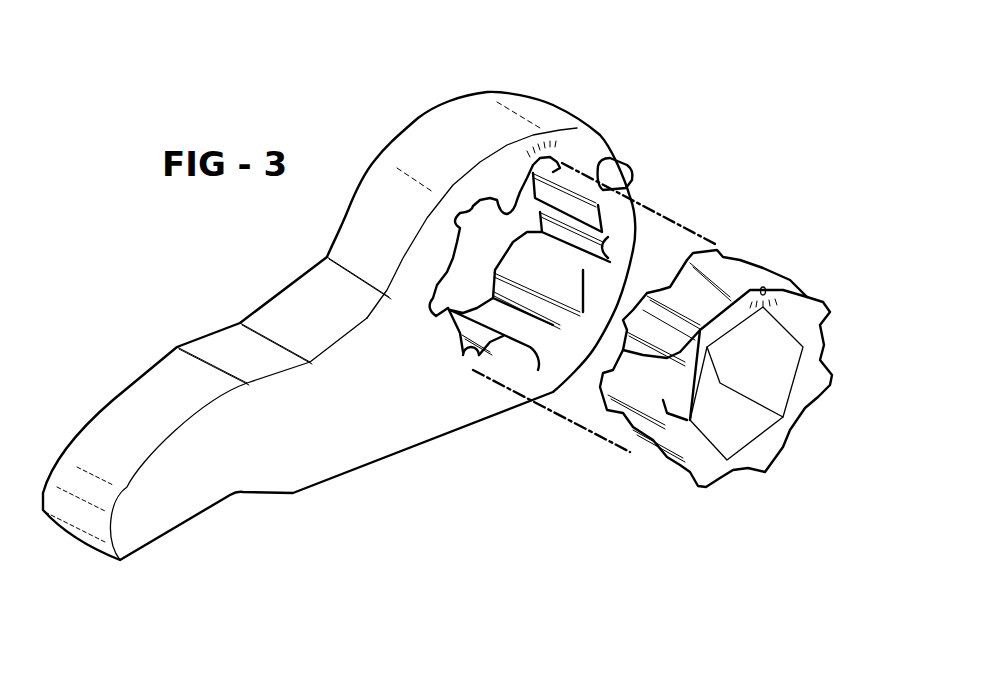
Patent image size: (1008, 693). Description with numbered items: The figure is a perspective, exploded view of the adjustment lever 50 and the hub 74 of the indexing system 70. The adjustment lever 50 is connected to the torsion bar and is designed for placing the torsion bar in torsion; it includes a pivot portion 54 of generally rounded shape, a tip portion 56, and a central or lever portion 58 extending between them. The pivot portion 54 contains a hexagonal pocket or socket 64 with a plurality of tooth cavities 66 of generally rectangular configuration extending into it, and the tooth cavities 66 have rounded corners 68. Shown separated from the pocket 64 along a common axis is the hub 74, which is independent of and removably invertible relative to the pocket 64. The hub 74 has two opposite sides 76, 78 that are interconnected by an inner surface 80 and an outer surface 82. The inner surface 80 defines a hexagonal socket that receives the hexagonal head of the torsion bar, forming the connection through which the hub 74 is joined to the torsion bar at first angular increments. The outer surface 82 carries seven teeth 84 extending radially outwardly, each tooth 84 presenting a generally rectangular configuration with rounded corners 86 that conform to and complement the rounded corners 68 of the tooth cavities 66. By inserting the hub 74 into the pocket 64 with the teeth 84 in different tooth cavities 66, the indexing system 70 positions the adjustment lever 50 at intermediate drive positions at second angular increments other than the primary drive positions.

The adjustment lever 50 is at (168, 278).
The pivot portion 54 is at (437, 137).
The tip portion 56 is at (183, 500).
The lever portion 58 is at (385, 455).
The hexagonal pocket 64 is at (493, 197).
The tooth cavities 66 is at (468, 222).
The rounded corners 68 is at (481, 196).
The indexing system 70 is at (762, 170).
The hub 74 is at (832, 317).
The first side 76 is at (705, 453).
The second side 78 is at (608, 372).
The inner surface 80 is at (717, 376).
The outer surface 82 is at (748, 285).
The teeth 84 is at (653, 315).
The rounded corners 86 is at (715, 303).